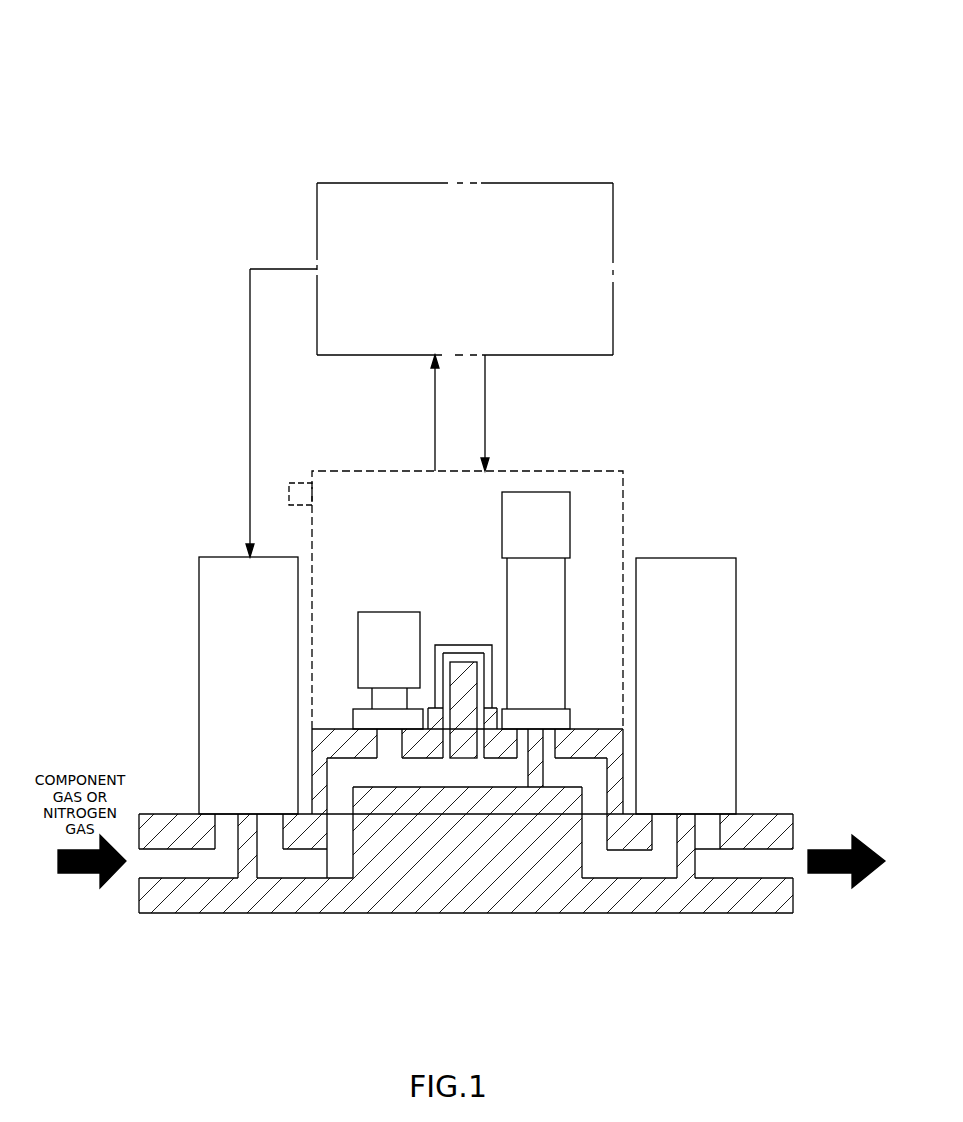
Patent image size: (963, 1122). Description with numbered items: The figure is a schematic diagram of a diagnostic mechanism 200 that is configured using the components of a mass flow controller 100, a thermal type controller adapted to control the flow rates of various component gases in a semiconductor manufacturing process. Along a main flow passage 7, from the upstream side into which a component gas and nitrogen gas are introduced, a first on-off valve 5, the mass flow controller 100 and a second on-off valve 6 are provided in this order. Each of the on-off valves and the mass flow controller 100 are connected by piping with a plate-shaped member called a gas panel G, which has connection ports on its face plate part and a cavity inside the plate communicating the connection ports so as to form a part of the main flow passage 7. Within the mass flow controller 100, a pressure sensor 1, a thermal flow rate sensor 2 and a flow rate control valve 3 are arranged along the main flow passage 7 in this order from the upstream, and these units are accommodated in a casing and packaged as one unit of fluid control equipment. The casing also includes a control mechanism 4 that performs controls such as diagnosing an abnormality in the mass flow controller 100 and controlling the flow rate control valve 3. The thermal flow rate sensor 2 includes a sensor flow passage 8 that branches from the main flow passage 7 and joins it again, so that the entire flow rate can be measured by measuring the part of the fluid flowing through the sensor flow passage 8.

The pressure sensor 1 is at (390, 612).
The thermal flow rate sensor 2 is at (460, 645).
The flow rate control valve 3 is at (537, 492).
The control mechanism 4 is at (465, 184).
The first on-off valve 5 is at (210, 557).
The second on-off valve 6 is at (716, 558).
The main flow passage 7 is at (322, 863).
The sensor flow passage 8 is at (470, 662).
The gas panel G is at (457, 912).
The mass flow controller 100 is at (620, 412).
The diagnostic mechanism 200 is at (190, 128).